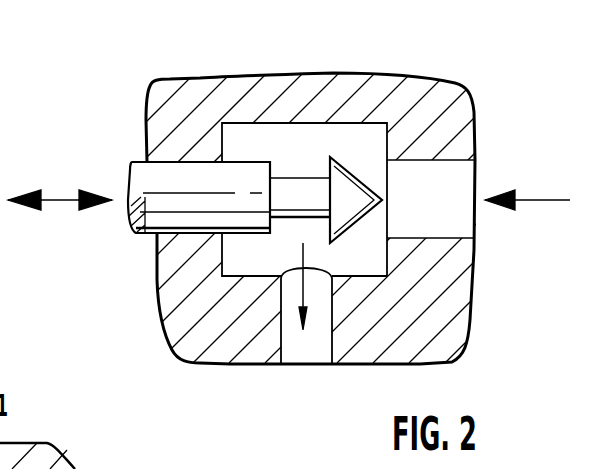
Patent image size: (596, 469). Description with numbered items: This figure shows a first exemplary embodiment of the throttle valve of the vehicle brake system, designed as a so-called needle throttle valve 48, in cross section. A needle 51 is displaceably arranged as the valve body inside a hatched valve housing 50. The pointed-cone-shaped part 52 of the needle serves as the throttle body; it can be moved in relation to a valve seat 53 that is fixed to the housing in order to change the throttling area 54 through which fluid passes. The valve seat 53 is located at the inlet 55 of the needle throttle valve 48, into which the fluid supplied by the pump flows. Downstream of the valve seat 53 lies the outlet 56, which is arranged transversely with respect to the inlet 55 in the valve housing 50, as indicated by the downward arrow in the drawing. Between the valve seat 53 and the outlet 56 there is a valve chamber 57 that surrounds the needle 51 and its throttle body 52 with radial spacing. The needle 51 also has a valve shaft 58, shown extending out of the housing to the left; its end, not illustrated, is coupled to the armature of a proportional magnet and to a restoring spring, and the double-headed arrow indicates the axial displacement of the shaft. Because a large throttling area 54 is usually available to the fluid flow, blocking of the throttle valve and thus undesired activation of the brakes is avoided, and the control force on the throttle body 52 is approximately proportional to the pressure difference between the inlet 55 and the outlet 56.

The needle throttle valve 48 is at (482, 329).
The valve housing 50 is at (467, 88).
The needle 51 is at (330, 157).
The pointed-cone-shaped part 52 is at (353, 226).
The valve seat 53 is at (387, 234).
The throttling area 54 is at (388, 160).
The inlet 55 is at (450, 232).
The outlet 56 is at (313, 348).
The valve chamber 57 is at (237, 262).
The valve shaft 58 is at (133, 163).